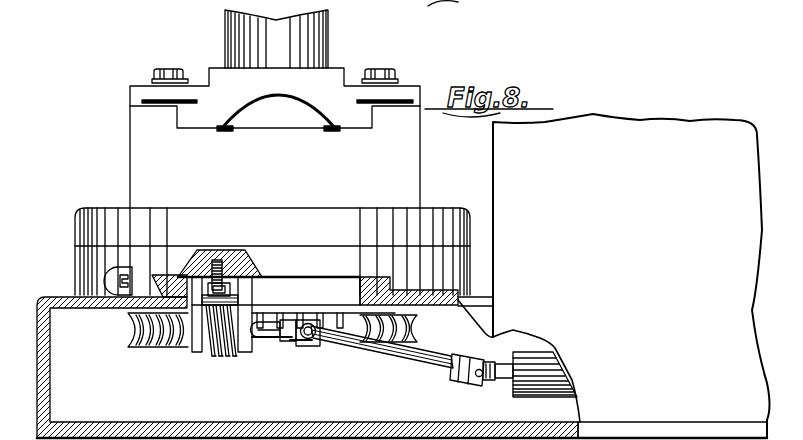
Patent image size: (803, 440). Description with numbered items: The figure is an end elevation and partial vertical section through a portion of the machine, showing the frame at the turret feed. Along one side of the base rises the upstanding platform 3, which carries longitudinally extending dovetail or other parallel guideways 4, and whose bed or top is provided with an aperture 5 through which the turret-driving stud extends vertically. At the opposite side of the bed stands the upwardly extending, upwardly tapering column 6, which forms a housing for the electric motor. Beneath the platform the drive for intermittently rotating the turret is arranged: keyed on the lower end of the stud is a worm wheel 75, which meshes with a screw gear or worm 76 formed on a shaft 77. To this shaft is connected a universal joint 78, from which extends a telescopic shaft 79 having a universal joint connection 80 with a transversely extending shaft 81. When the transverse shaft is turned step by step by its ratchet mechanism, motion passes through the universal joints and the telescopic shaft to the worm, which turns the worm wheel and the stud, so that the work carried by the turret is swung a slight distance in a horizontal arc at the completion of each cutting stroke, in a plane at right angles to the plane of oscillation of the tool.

The upstanding platform 3 is at (52, 297).
The guideways 4 is at (165, 273).
The aperture 5 is at (279, 290).
The column 6 is at (632, 125).
The worm wheel 75 is at (177, 342).
The screw gear or worm 76 is at (230, 357).
The shaft 77 is at (270, 350).
The universal joint 78 is at (312, 348).
The telescopic shaft 79 is at (405, 360).
The universal joint connection 80 is at (470, 383).
The transversely extending shaft 81 is at (510, 385).